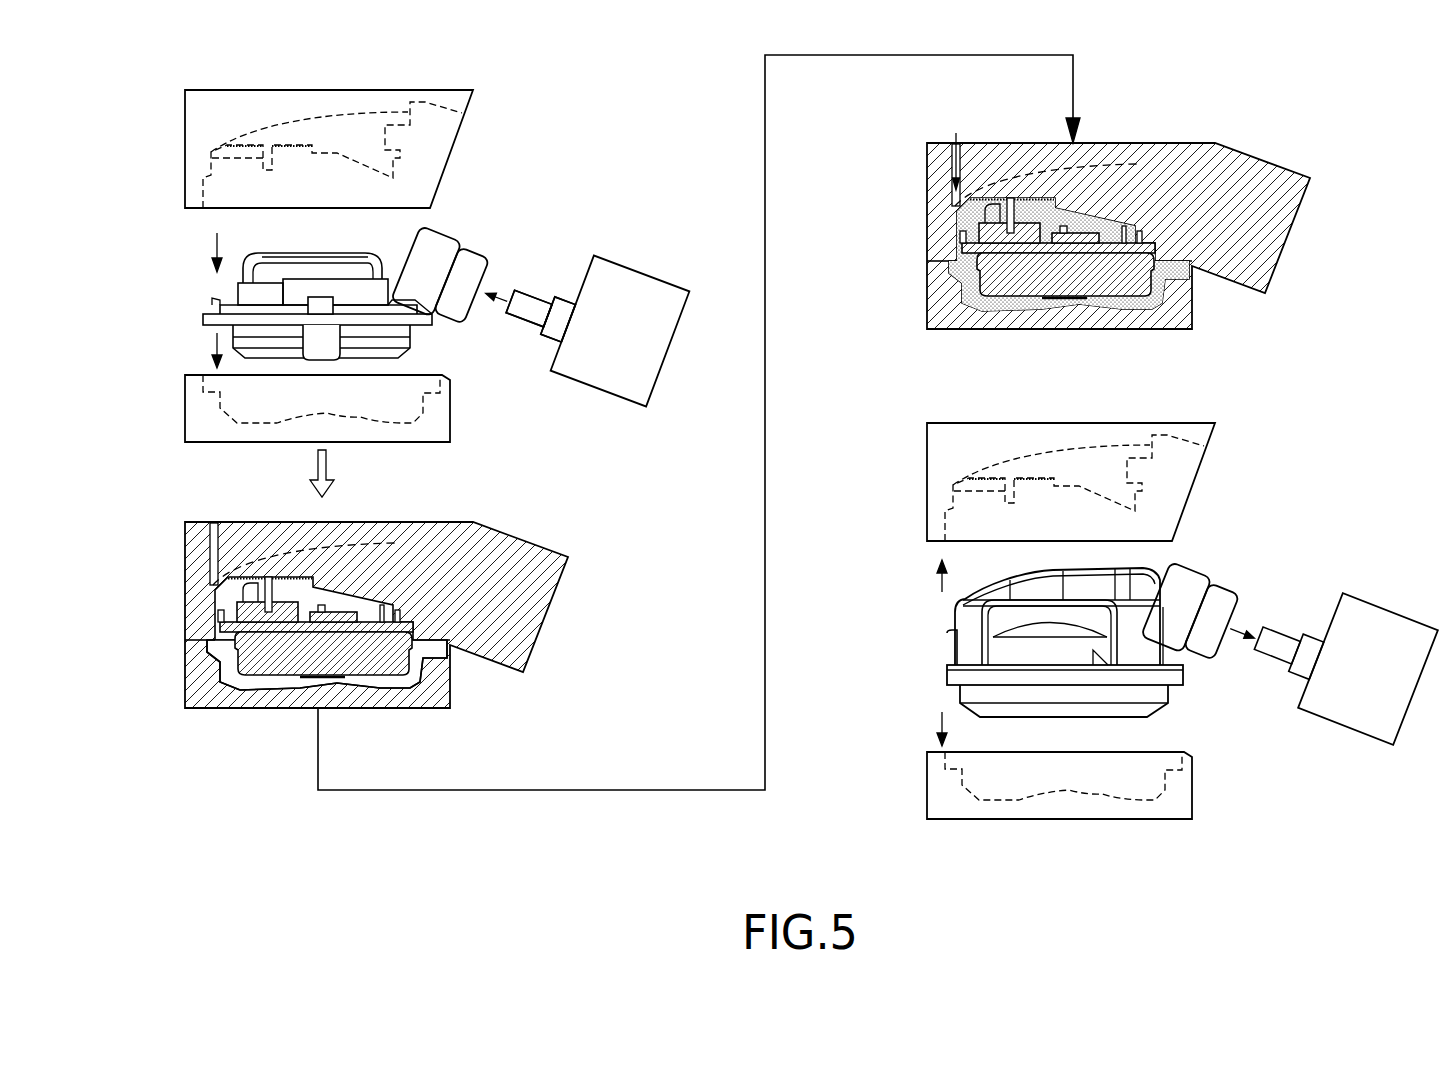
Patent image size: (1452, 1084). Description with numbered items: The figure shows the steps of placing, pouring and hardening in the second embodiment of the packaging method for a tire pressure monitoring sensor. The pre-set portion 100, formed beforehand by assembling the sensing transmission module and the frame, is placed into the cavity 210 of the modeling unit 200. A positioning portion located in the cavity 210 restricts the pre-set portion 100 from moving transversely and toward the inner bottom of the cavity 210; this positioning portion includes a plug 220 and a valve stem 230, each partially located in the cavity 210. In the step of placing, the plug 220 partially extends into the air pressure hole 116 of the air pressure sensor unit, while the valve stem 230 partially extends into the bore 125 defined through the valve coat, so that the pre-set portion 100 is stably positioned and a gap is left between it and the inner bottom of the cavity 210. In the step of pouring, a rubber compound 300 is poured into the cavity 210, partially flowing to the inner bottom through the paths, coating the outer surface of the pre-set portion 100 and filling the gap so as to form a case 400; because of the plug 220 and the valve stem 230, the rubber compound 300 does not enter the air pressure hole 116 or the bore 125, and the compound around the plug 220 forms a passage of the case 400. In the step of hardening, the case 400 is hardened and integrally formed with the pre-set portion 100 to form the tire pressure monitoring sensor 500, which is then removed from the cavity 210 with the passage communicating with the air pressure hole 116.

The pre-set portion 100 is at (170, 282).
The air pressure hole 116 is at (1012, 223).
The bore 125 is at (468, 580).
The modeling unit 200 is at (172, 410).
The cavity 210 is at (218, 652).
The plug 220 is at (212, 158).
The valve stem 230 is at (546, 300).
The rubber compound 300 is at (1153, 298).
The case 400 is at (1069, 286).
The tire pressure monitoring sensor 500 is at (920, 661).